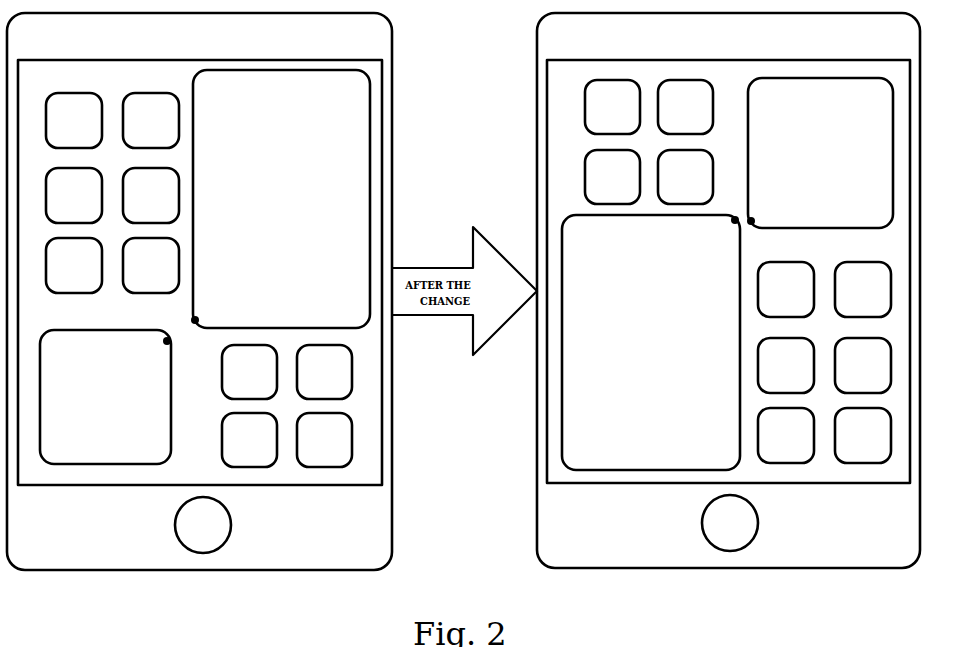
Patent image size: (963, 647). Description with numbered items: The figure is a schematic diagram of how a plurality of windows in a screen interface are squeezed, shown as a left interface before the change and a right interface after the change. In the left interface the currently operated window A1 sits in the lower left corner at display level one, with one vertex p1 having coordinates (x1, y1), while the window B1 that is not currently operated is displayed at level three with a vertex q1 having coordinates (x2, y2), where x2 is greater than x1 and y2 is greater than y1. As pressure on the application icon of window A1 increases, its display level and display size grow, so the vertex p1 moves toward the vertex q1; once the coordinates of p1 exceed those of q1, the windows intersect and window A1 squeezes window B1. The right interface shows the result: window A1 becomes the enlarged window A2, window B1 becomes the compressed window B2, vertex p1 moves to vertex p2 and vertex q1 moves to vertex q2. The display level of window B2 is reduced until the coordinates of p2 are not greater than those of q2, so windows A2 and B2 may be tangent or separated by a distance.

The currently operated window A1 is at (105, 397).
The window not currently operated B1 is at (281, 199).
The vertex of window A1 p1 is at (164, 341).
The vertex of window B1 q1 is at (199, 320).
The changed currently operated window A2 is at (651, 342).
The compressed window B2 is at (820, 153).
The vertex of window A2 p2 is at (732, 222).
The vertex of window B2 q2 is at (755, 221).